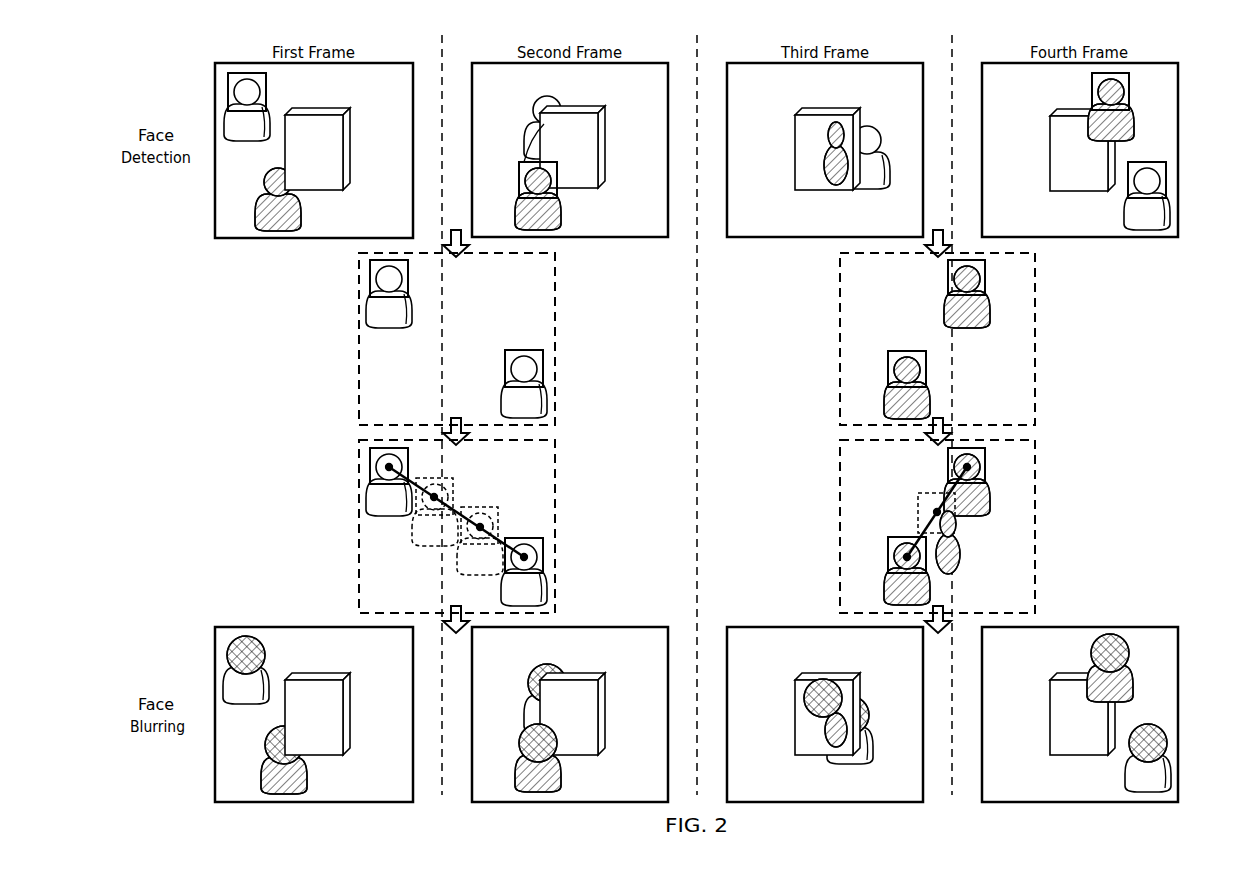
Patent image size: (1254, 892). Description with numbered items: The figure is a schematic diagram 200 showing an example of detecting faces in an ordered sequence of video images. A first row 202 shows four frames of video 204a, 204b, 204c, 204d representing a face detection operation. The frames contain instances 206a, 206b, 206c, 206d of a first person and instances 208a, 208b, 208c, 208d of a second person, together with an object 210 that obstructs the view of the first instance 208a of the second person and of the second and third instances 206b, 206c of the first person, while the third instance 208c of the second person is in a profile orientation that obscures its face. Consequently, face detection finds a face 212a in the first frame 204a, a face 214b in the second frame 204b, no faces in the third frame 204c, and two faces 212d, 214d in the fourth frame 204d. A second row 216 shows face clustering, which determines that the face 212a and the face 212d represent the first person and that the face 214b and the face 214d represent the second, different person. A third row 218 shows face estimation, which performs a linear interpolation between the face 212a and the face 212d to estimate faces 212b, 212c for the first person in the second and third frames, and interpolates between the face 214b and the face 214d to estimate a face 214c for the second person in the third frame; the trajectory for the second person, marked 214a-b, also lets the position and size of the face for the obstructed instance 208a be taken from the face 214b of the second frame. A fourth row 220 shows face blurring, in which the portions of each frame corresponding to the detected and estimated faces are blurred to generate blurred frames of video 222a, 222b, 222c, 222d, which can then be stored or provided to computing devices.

The schematic diagram 200 is at (126, 82).
The first row 202 is at (134, 209).
The first frame of video 204a is at (314, 150).
The second frame of video 204b is at (570, 150).
The third frame of video 204c is at (825, 150).
The fourth frame of video 204d is at (1080, 150).
The first instance of the first person 206a is at (225, 117).
The second instance of the first person 206b is at (539, 106).
The third instance of the first person 206c is at (866, 140).
The fourth instance of the first person 206d is at (1170, 211).
The first instance of the second person 208a is at (261, 197).
The second instance of the second person 208b is at (560, 213).
The third instance of the second person 208c is at (825, 152).
The fourth instance of the second person 208d is at (1132, 118).
The object 210 is at (795, 112).
The face 212a is at (266, 89).
The estimated face 212b is at (453, 498).
The estimated face 212c is at (498, 528).
The face 212d is at (1166, 179).
The faces of the second person 214a-b is at (888, 558).
The face 214b is at (525, 162).
The estimated face 214c is at (918, 513).
The face 214d is at (1092, 92).
The second row 216 is at (227, 346).
The third row 218 is at (227, 534).
The fourth row 220 is at (134, 647).
The blurred frame of video 222a is at (314, 714).
The blurred frame of video 222b is at (570, 714).
The blurred frame of video 222c is at (825, 714).
The blurred frame of video 222d is at (1080, 714).